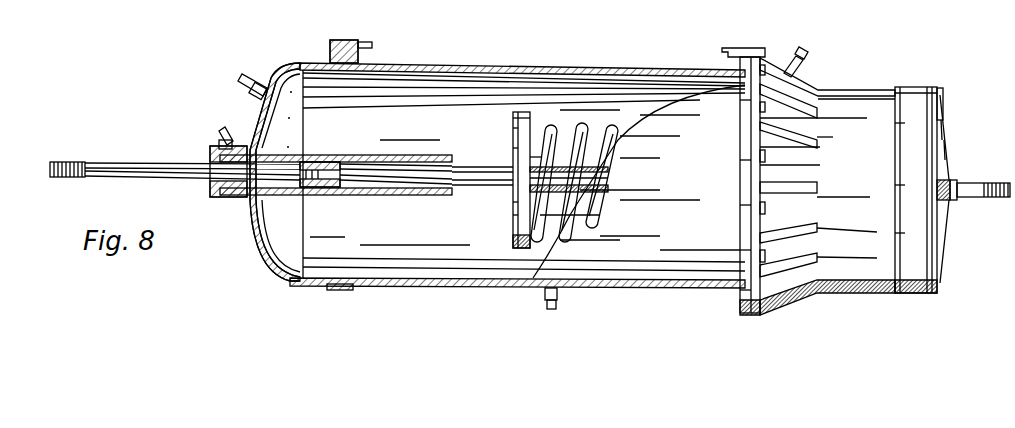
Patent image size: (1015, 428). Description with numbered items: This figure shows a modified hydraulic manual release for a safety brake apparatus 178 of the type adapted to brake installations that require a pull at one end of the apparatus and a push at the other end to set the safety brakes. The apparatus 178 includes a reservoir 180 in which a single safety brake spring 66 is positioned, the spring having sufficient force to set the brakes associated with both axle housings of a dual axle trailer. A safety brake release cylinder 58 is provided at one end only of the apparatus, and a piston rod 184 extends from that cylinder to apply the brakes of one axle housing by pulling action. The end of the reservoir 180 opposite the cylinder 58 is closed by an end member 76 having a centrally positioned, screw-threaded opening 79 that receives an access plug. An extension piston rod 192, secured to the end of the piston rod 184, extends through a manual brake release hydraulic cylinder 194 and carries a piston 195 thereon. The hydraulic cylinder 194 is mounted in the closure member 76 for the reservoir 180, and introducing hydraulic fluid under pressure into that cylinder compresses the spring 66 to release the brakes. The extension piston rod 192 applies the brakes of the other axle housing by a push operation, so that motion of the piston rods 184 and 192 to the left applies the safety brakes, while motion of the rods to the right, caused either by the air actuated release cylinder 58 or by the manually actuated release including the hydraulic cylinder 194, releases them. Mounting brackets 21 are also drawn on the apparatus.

The mounting bracket 21 is at (366, 43).
The safety brake release cylinder 58 is at (848, 100).
The safety brake spring 66 is at (581, 130).
The end member 76 is at (255, 247).
The opening 79 is at (250, 190).
The safety brake apparatus 178 is at (485, 296).
The reservoir 180 is at (400, 288).
The piston rod 184 is at (480, 178).
The extension piston rod 192 is at (133, 170).
The manual brake release hydraulic cylinder 194 is at (382, 197).
The piston 195 is at (302, 158).